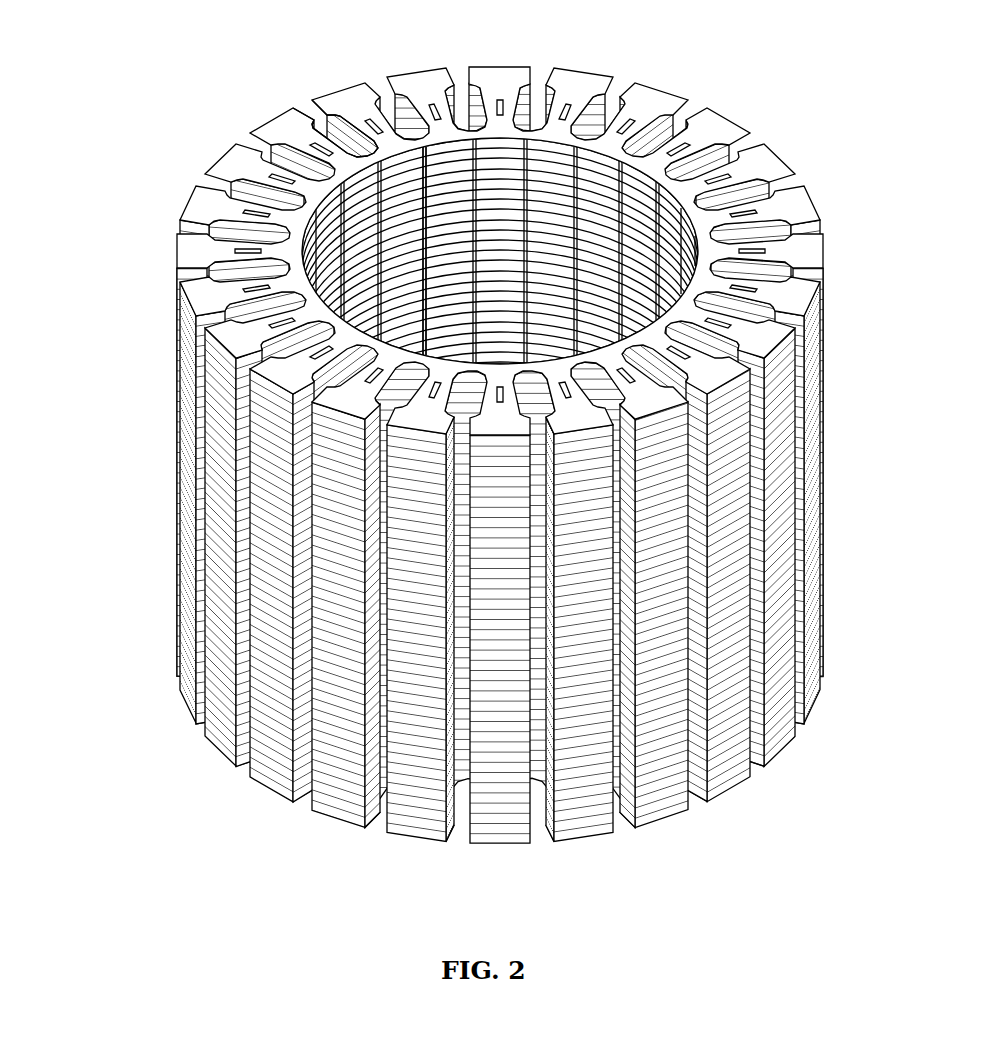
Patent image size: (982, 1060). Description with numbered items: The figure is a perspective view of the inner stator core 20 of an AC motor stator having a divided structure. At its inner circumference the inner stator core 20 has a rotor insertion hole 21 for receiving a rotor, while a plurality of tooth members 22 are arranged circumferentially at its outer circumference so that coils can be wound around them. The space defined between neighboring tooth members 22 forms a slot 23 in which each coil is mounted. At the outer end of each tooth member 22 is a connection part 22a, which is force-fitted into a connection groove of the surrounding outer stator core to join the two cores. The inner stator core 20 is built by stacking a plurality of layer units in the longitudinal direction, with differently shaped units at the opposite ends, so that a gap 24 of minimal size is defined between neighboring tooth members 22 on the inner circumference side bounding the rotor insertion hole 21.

The inner stator core 20 is at (476, 431).
The rotor insertion hole 21 is at (497, 243).
The tooth member 22 is at (717, 343).
The connection part 22a is at (797, 353).
The slot 23 is at (332, 104).
The gap 24 is at (438, 165).